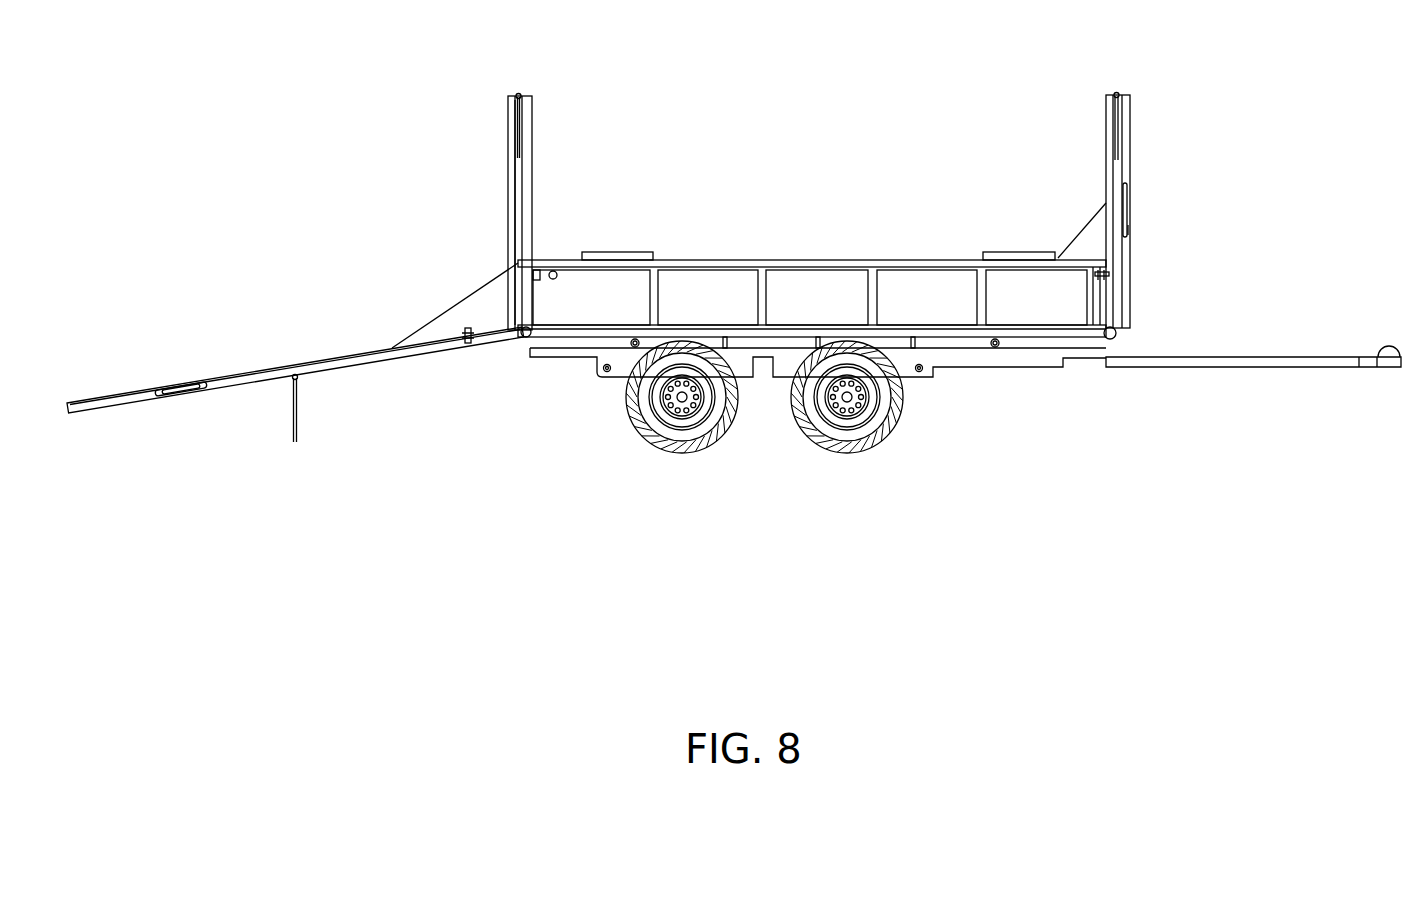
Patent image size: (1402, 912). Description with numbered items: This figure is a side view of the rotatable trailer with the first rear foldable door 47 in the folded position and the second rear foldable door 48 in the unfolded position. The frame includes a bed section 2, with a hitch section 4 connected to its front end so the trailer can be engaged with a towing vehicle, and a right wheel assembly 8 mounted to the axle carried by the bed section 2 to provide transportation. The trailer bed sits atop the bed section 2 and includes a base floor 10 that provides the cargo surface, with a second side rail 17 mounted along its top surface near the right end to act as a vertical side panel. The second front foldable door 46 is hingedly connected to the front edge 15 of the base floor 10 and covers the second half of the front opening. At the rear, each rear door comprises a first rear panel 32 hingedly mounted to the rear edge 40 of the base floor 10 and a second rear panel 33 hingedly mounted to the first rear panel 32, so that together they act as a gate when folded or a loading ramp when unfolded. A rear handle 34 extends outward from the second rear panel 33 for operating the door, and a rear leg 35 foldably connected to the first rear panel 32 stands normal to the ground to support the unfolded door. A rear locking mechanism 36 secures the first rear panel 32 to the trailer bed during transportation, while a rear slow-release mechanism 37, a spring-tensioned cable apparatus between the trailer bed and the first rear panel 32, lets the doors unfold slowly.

The bed section 2 is at (972, 358).
The hitch section 4 is at (1262, 358).
The right wheel assembly 8 is at (683, 450).
The base floor 10 is at (700, 330).
The front edge 15 is at (1118, 345).
The second side rail 17 is at (830, 268).
The first rear panel 32 is at (532, 130).
The second rear panel 33 is at (510, 118).
The rear handle 34 is at (173, 395).
The rear leg 35 is at (518, 96).
The rear locking mechanism 36 is at (468, 328).
The rear slow-release mechanism 37 is at (628, 252).
The rear edge 40 is at (528, 341).
The second front foldable door 46 is at (1147, 148).
The first rear foldable door 47 is at (542, 174).
The second rear foldable door 48 is at (301, 326).